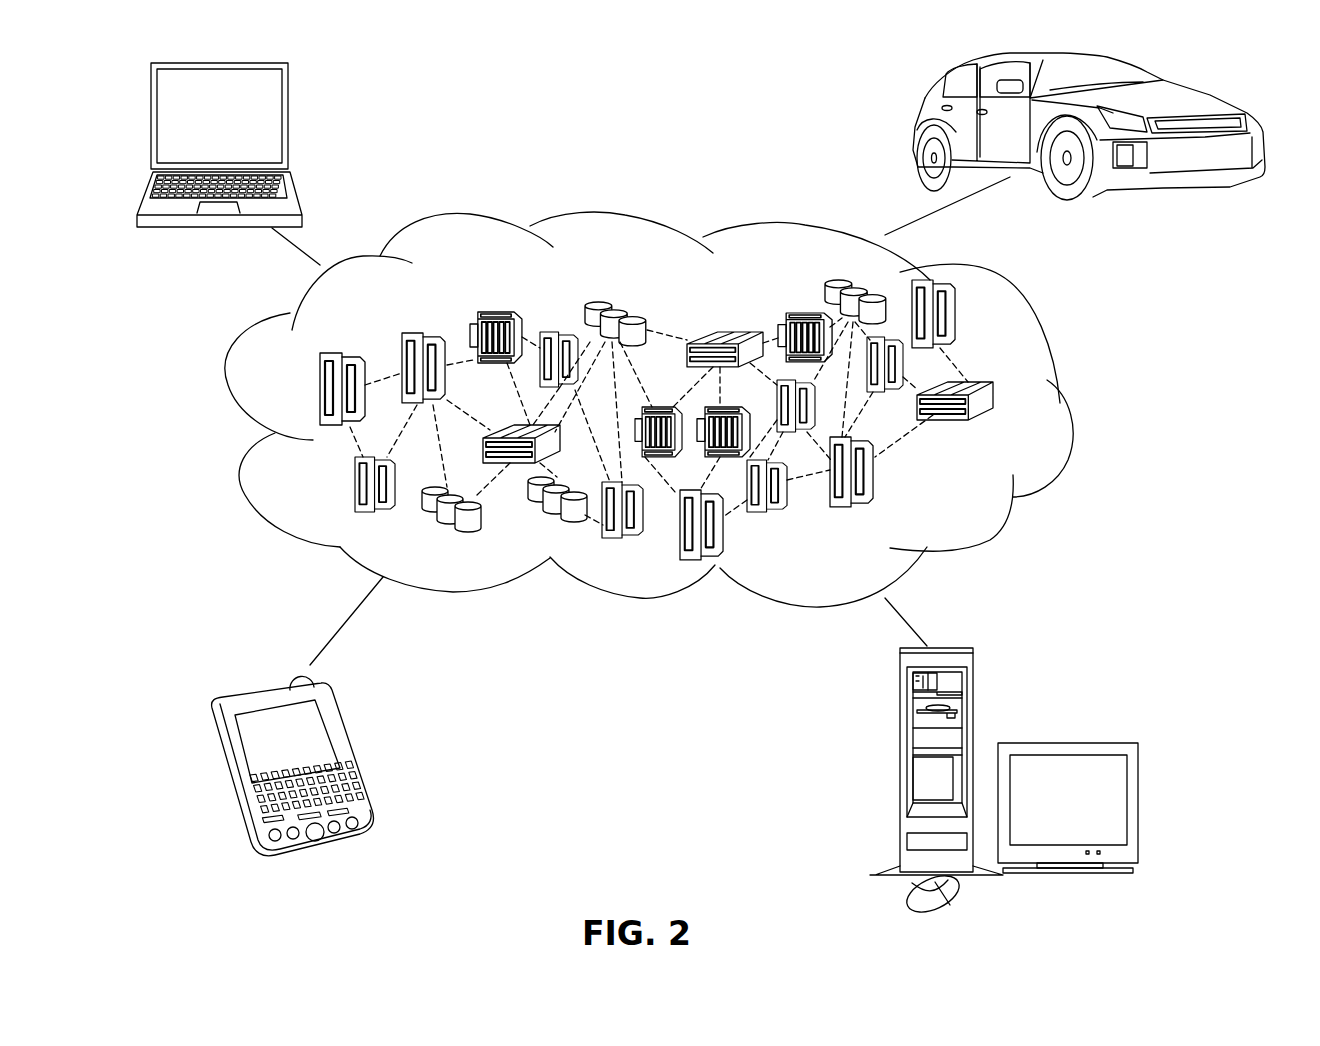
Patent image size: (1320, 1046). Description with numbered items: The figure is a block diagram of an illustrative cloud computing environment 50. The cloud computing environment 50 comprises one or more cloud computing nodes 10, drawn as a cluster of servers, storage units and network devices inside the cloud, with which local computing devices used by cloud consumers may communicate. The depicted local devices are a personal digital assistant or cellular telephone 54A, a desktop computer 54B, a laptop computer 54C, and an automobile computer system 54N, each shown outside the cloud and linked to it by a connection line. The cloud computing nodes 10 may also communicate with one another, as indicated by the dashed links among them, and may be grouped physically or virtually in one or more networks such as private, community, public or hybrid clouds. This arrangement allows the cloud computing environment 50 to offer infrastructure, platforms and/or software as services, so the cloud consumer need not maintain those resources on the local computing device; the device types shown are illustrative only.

The cloud computing node 10 is at (972, 498).
The cloud computing environment 50 is at (1067, 402).
The personal digital assistant or cellular telephone 54A is at (343, 724).
The desktop computer 54B is at (898, 708).
The laptop computer 54C is at (288, 100).
The automobile computer system 54N is at (920, 113).